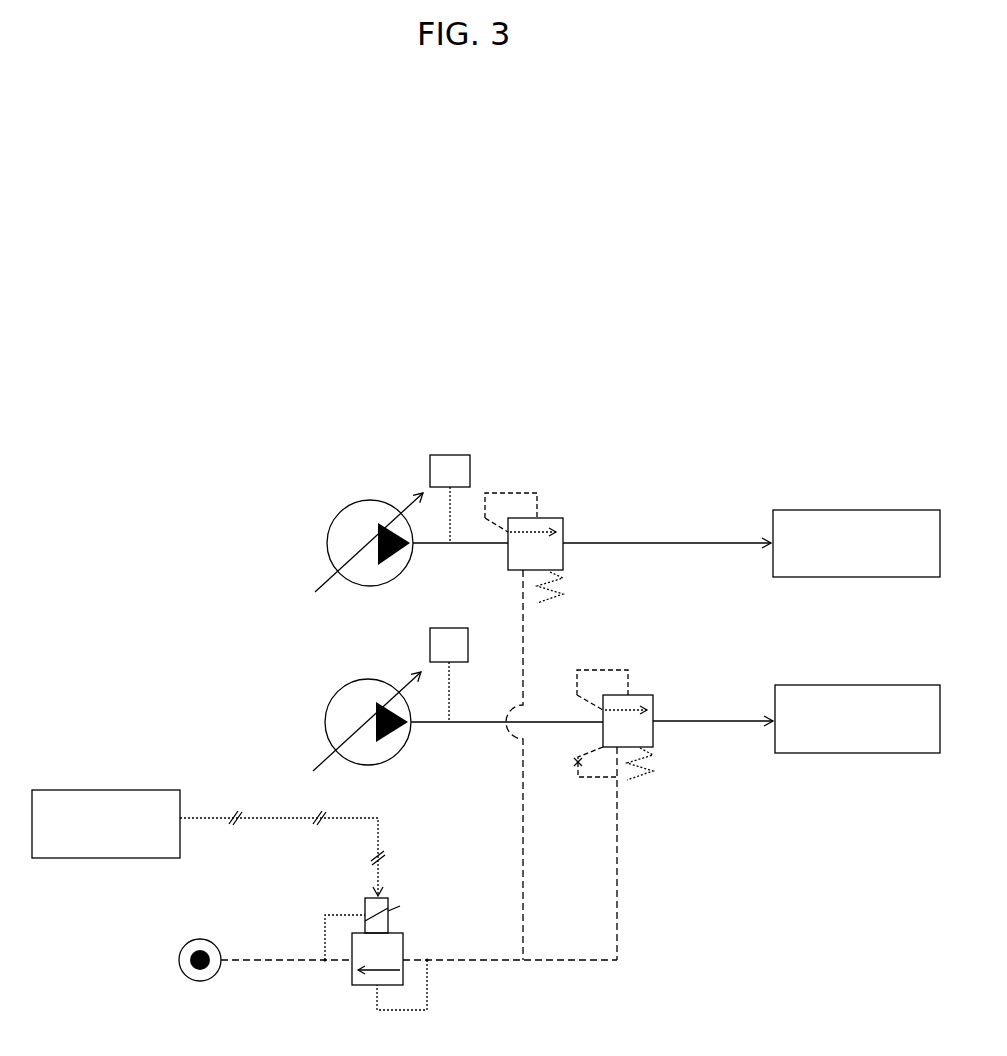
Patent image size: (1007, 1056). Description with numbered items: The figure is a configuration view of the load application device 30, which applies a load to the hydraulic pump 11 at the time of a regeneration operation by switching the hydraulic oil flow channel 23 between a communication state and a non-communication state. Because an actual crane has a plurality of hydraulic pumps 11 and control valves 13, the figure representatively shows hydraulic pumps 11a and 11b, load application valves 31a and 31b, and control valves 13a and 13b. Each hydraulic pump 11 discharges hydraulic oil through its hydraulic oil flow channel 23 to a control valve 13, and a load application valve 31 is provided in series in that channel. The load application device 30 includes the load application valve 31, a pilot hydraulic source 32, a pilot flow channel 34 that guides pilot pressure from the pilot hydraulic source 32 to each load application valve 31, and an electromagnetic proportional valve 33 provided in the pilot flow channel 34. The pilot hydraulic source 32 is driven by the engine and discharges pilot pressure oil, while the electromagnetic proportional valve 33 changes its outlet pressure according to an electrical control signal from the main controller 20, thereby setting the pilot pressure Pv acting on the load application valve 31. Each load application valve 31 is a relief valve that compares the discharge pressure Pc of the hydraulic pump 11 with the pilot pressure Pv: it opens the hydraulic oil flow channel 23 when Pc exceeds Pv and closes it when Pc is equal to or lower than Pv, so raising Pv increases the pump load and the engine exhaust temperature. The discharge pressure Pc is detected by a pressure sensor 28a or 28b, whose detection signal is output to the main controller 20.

The hydraulic pump 11 is at (429, 610).
The hydraulic pump 11a is at (343, 503).
The hydraulic pump 11b is at (347, 688).
The control valve 13 is at (862, 602).
The control valve 13a is at (877, 508).
The control valve 13b is at (912, 660).
The main controller 20 is at (143, 788).
The hydraulic oil flow channel 23 is at (620, 545).
The pressure sensor 28a is at (455, 455).
The pressure sensor 28b is at (452, 630).
The load application device 30 is at (660, 904).
The load application valve 31 is at (614, 711).
The load application valve 31a is at (553, 518).
The load application valve 31b is at (643, 692).
The pilot hydraulic source 32 is at (205, 942).
The electromagnetic proportional valve 33 is at (405, 935).
The pilot flow channel 34 is at (472, 962).